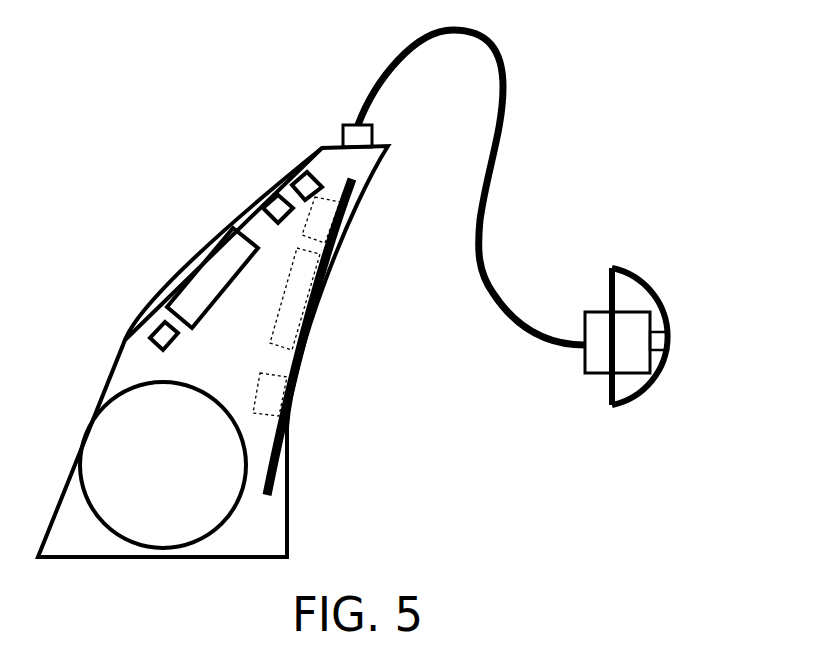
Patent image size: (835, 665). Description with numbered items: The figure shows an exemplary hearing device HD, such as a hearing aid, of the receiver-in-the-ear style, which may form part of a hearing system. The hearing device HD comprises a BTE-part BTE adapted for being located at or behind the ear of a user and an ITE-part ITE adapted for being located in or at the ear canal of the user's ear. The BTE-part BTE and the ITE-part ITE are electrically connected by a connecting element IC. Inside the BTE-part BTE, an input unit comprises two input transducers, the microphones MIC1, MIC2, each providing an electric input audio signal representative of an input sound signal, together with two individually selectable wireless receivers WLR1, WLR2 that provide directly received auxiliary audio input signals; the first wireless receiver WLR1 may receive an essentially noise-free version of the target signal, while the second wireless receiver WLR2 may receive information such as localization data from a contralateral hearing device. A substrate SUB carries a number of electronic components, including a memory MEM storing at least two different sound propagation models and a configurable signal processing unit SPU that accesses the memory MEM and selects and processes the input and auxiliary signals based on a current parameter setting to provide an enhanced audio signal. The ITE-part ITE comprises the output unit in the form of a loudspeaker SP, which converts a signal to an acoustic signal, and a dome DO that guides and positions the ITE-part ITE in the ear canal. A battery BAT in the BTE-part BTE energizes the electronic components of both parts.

The hearing device HD is at (142, 123).
The BTE-part BTE is at (291, 520).
The battery BAT is at (163, 465).
The substrate SUB is at (283, 440).
The first input transducer MIC1 is at (293, 182).
The second input transducer MIC2 is at (273, 203).
The first wireless receiver WLR1 is at (200, 265).
The second wireless receiver WLR2 is at (150, 336).
The configurable signal processing unit SPU is at (279, 310).
The memory MEM is at (260, 375).
The connecting element IC is at (493, 302).
The ITE-part ITE is at (608, 433).
The loudspeaker SP is at (587, 360).
The dome DO is at (647, 282).